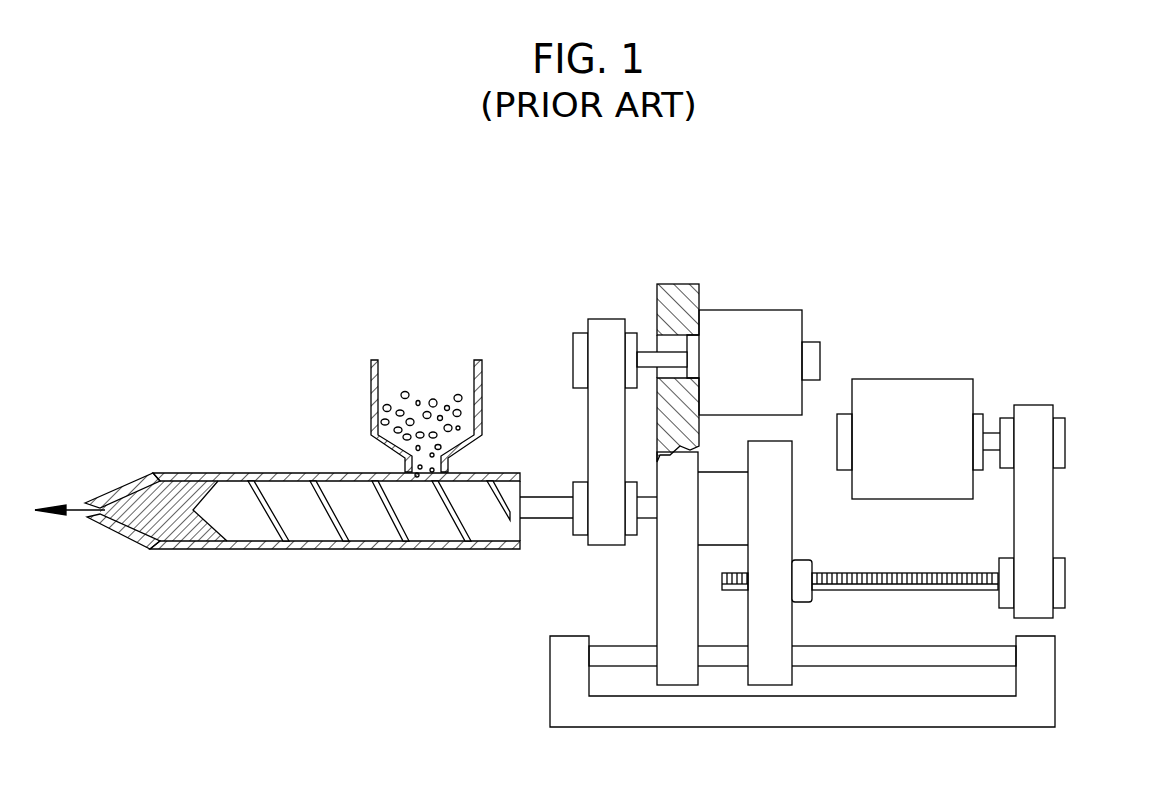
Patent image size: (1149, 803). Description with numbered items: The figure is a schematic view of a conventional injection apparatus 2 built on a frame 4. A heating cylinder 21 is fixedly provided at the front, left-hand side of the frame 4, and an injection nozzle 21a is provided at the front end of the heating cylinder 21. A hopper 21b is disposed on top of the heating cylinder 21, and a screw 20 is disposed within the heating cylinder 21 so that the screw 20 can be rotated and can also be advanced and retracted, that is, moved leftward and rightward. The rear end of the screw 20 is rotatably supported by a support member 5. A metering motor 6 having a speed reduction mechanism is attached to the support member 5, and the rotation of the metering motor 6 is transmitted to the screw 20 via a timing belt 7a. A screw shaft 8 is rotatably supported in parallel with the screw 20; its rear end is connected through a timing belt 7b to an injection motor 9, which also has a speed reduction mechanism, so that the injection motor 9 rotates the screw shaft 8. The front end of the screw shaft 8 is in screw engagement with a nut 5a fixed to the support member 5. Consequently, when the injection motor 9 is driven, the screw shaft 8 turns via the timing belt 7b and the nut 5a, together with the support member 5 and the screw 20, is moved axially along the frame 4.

The injection apparatus 2 is at (613, 290).
The frame 4 is at (630, 718).
The support member 5 is at (708, 523).
The nut 5a is at (800, 562).
The metering motor 6 is at (755, 335).
The timing belt 7a is at (598, 434).
The timing belt 7b is at (1037, 523).
The screw shaft 8 is at (900, 590).
The injection motor 9 is at (903, 407).
The screw 20 is at (307, 523).
The heating cylinder 21 is at (278, 472).
The injection nozzle 21a is at (107, 492).
The hopper 21b is at (482, 383).